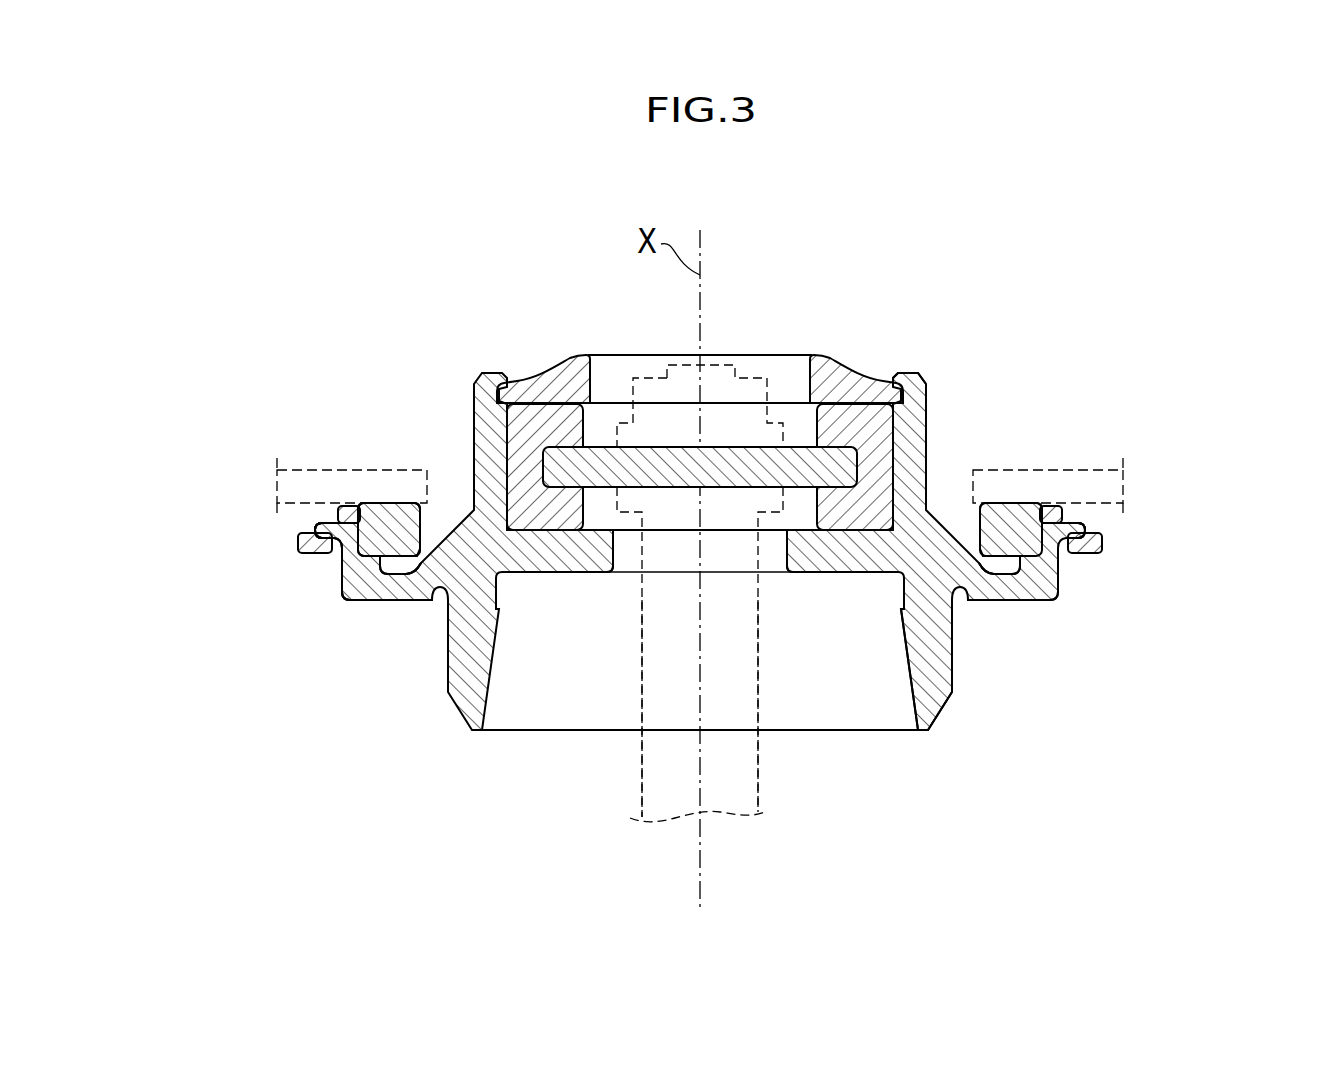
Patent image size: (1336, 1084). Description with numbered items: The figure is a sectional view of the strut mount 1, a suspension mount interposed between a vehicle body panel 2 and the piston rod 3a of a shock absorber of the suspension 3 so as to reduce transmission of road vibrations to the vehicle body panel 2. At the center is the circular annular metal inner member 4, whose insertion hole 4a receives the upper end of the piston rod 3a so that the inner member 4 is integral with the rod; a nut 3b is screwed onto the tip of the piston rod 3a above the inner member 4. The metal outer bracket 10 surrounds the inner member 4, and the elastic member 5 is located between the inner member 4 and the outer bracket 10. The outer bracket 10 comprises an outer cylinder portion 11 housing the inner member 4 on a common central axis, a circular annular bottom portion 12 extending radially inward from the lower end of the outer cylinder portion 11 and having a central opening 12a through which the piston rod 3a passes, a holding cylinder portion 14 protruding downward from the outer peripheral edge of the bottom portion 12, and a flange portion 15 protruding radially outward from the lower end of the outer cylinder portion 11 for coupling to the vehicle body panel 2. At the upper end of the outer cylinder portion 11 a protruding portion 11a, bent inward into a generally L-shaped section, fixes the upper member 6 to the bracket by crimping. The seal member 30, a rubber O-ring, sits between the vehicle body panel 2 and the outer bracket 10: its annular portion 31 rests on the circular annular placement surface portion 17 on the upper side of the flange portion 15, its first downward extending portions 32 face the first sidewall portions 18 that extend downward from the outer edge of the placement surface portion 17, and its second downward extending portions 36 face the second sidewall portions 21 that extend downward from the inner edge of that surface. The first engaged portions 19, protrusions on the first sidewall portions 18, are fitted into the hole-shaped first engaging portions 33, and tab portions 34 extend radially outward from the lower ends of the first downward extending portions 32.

The strut mount 1 is at (1030, 306).
The vehicle body panel 2 is at (1073, 468).
The suspension 3 is at (764, 708).
The piston rod 3a is at (742, 764).
The nut 3b is at (748, 385).
The inner member 4 is at (598, 473).
The insertion hole 4a is at (685, 458).
The elastic member 5 is at (539, 532).
The upper member 6 is at (573, 357).
The outer bracket 10 is at (467, 438).
The outer cylinder portion 11 is at (914, 416).
The protruding portion 11a is at (918, 382).
The bottom portion 12 is at (833, 550).
The opening 12a is at (786, 553).
The holding cylinder portion 14 is at (943, 685).
The flange portion 15 is at (335, 590).
The placement surface portion 17 is at (358, 504).
The first sidewall portion 18 is at (338, 588).
The first engaged portion 19 is at (318, 527).
The second sidewall portion 21 is at (390, 574).
The seal member 30 is at (402, 487).
The annular portion 31 is at (352, 512).
The first downward extending portion 32 is at (342, 580).
The first engaging portion 33 is at (699, 509).
The tab portion 34 is at (298, 544).
The second downward extending portion 36 is at (415, 566).